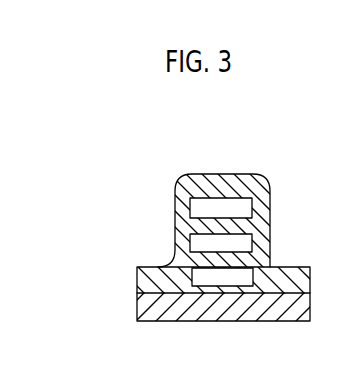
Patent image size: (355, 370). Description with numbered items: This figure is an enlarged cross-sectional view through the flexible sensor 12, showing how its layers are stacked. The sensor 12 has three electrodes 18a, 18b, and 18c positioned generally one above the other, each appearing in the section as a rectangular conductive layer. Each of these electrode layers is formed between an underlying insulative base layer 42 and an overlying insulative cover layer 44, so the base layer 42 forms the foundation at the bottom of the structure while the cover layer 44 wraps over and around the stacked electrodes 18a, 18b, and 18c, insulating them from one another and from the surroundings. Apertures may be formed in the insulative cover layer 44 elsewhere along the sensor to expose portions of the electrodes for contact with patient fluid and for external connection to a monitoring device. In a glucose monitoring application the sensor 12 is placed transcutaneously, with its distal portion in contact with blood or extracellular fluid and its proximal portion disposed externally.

The sensor 12 is at (140, 232).
The insulative base layer 42 is at (138, 296).
The insulative cover layer 44 is at (212, 178).
The electrode 18a is at (252, 207).
The electrode 18b is at (252, 243).
The electrode 18c is at (258, 277).